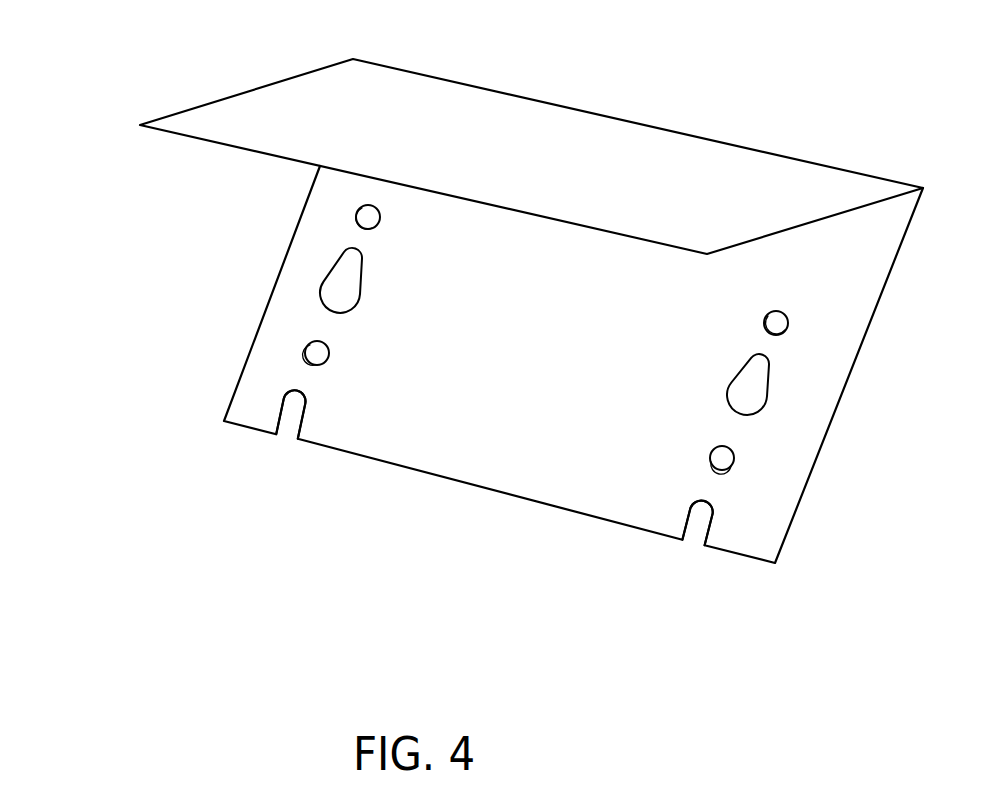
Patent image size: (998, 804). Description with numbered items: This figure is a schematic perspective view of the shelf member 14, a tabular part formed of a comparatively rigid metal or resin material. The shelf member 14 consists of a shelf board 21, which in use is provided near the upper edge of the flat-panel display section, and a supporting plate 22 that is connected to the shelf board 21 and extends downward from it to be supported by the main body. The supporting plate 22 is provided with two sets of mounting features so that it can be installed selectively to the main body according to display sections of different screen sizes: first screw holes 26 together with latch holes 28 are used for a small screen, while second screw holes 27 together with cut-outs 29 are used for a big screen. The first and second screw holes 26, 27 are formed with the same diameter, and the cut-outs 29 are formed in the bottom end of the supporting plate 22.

The shelf member 14 is at (504, 355).
The shelf board 21 is at (525, 112).
The supporting plate 22 is at (447, 435).
The first screw holes 26 is at (950, 380).
The second screw holes 27 is at (733, 470).
The latch holes 28 is at (887, 433).
The cut-outs 29 is at (282, 440).